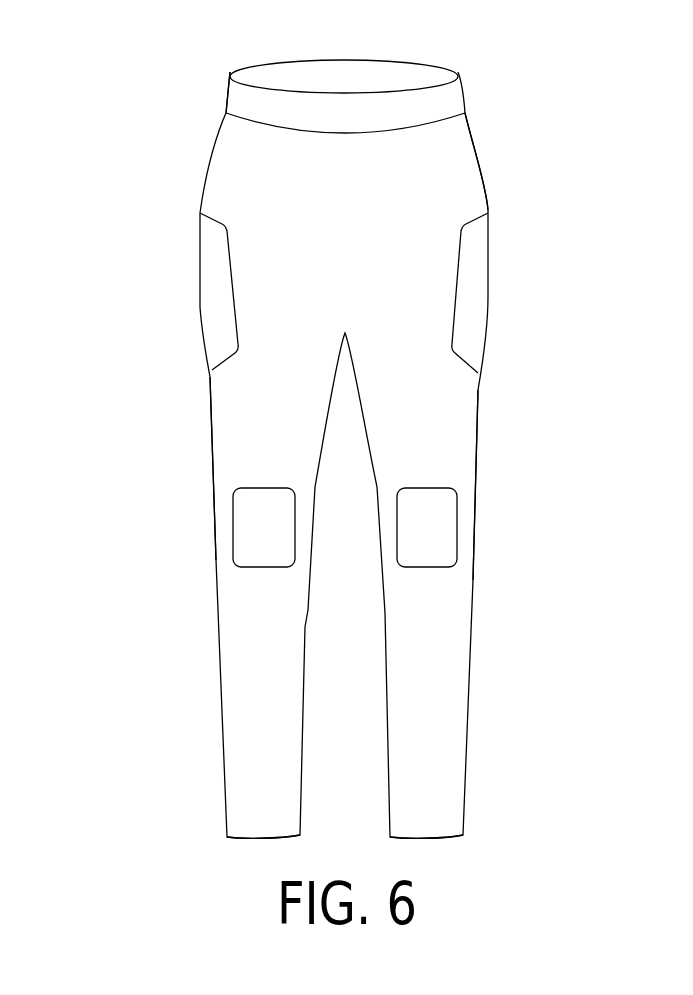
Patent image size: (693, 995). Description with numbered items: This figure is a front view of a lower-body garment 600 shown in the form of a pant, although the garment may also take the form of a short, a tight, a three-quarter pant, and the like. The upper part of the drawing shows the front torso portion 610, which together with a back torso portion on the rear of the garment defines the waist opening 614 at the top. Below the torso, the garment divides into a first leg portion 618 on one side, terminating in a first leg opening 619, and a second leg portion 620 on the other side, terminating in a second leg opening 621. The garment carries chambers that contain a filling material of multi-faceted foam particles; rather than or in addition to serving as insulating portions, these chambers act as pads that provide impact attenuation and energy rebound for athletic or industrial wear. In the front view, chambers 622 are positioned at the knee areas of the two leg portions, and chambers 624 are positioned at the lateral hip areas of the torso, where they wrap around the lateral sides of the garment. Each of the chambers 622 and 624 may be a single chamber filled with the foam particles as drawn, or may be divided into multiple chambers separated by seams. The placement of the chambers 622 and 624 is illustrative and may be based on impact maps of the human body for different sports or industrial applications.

The lower-body garment 600 is at (110, 90).
The waist opening 614 is at (336, 45).
The front torso portion 610 is at (448, 153).
The chambers 624 is at (218, 303).
The first leg portion 618 is at (238, 428).
The second leg portion 620 is at (452, 428).
The chambers 622 is at (255, 533).
The first leg opening 619 is at (257, 840).
The second leg opening 621 is at (437, 840).